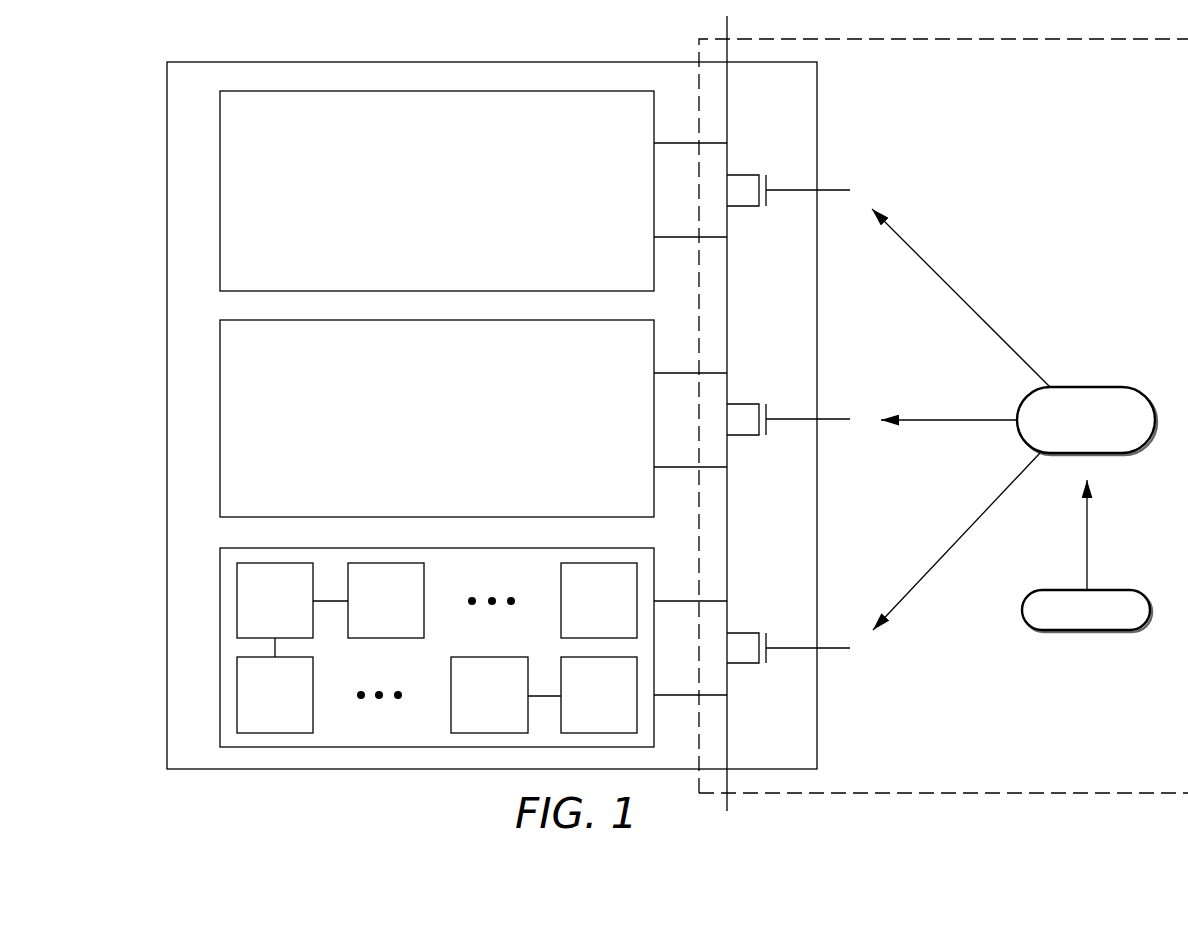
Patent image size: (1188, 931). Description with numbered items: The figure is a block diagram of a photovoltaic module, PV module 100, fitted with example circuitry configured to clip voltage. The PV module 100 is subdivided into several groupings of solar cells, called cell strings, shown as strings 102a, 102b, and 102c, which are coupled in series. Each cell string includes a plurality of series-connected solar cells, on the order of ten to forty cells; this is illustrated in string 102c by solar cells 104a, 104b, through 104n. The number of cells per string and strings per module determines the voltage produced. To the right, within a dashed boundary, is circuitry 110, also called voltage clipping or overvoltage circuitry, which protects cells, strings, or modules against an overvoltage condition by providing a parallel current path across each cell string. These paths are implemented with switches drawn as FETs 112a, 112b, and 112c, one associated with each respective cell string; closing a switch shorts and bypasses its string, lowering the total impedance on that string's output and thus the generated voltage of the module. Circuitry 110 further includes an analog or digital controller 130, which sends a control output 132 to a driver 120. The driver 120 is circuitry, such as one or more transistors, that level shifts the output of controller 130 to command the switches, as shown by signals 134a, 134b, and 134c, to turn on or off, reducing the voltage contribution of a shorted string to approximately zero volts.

The PV module 100 is at (508, 62).
The circuitry 110 is at (975, 793).
The string 102a is at (470, 91).
The string 102b is at (470, 320).
The string 102c is at (470, 548).
The solar cell 104a is at (298, 611).
The solar cell 104b is at (409, 611).
The solar cell 104n is at (622, 705).
The switch 112a is at (742, 175).
The switch 112b is at (742, 404).
The switch 112c is at (742, 633).
The driver 120 is at (1104, 430).
The controller 130 is at (1105, 621).
The control signal 132 is at (1087, 538).
The signal 134a is at (955, 291).
The signal 134b is at (937, 419).
The signal 134c is at (985, 512).